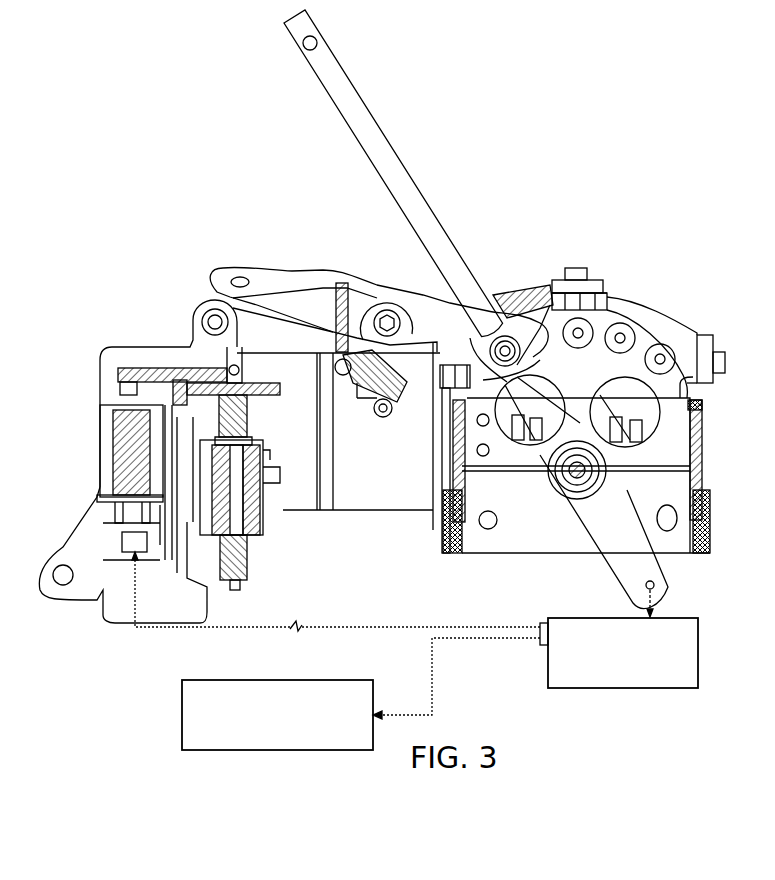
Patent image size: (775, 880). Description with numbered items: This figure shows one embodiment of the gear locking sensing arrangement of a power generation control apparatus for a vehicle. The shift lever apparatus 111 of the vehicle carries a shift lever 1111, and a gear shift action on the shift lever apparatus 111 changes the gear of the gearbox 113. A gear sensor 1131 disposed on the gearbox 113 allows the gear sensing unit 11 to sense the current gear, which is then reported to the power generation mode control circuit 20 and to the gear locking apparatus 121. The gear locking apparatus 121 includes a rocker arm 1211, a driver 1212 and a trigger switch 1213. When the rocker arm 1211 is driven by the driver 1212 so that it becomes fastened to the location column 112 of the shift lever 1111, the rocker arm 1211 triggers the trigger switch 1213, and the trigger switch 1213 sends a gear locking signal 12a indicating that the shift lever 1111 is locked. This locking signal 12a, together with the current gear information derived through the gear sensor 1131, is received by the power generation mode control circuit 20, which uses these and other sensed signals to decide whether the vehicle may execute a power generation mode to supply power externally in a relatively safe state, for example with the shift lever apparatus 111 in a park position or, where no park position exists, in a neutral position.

The gear sensing unit 11 is at (721, 680).
The shift lever apparatus 111 is at (660, 297).
The shift lever 1111 is at (352, 120).
The location column 112 is at (511, 363).
The gearbox 113 is at (636, 689).
The gear sensor 1131 is at (546, 647).
The gear locking apparatus 121 is at (167, 318).
The rocker arm 1211 is at (413, 283).
The driver 1212 is at (259, 432).
The trigger switch 1213 is at (360, 398).
The gear locking signal 12a is at (350, 630).
The power generation mode control circuit 20 is at (252, 680).